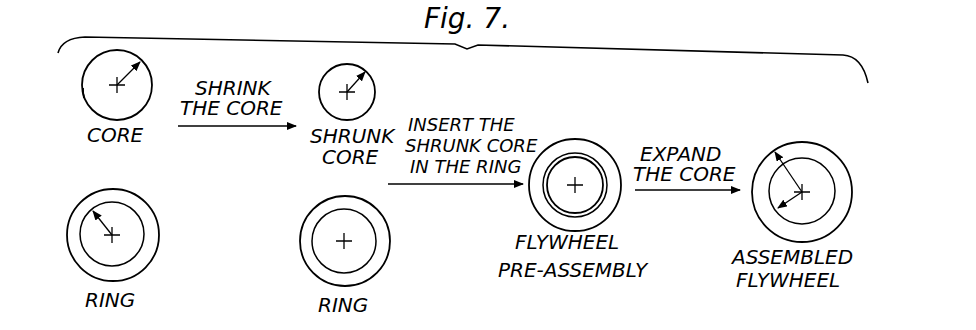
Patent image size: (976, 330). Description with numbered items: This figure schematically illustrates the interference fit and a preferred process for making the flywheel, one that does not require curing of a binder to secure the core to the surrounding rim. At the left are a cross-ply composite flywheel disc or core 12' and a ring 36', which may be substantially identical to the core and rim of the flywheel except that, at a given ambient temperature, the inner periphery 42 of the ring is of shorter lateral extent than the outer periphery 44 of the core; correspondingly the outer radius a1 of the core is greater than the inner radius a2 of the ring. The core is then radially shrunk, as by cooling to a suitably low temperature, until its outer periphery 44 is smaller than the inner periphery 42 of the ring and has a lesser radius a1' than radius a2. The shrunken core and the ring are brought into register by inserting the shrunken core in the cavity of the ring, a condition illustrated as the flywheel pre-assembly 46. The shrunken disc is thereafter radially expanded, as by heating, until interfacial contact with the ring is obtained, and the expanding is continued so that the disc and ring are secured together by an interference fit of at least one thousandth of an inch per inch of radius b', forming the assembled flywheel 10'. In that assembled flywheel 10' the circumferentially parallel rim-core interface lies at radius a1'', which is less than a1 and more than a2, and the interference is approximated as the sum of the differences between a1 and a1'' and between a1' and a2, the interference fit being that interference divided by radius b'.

The core 12' is at (97, 85).
The outer periphery 44 is at (85, 105).
The outer radius a1 is at (147, 69).
The radius a1' is at (361, 92).
The ring 36' is at (93, 235).
The inner periphery 42 is at (80, 253).
The inner radius a2 is at (110, 214).
The flywheel pre-assembly 46 is at (618, 208).
The radius b' is at (806, 153).
The radius a1'' is at (781, 196).
The assembled flywheel 10' is at (829, 188).